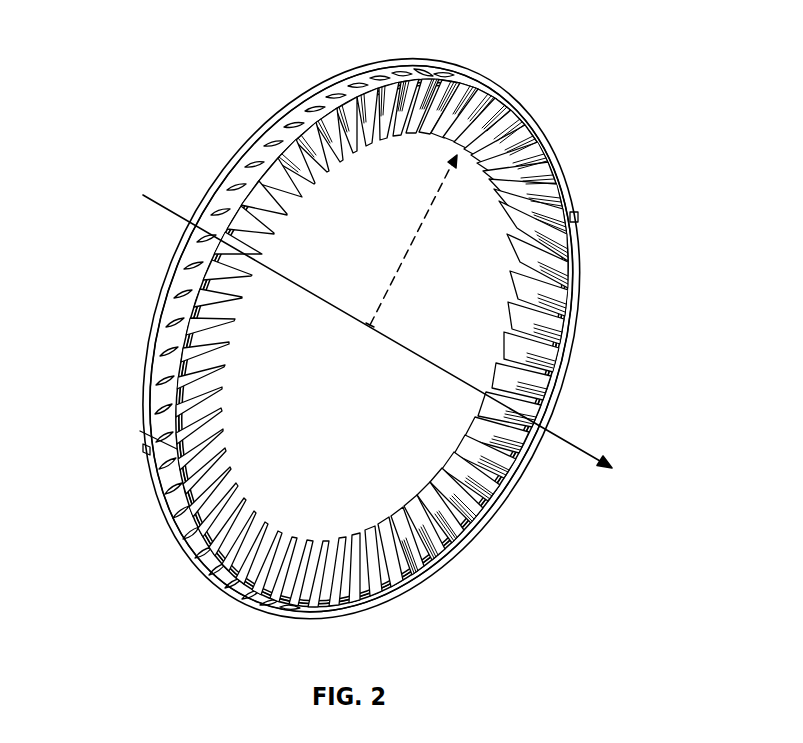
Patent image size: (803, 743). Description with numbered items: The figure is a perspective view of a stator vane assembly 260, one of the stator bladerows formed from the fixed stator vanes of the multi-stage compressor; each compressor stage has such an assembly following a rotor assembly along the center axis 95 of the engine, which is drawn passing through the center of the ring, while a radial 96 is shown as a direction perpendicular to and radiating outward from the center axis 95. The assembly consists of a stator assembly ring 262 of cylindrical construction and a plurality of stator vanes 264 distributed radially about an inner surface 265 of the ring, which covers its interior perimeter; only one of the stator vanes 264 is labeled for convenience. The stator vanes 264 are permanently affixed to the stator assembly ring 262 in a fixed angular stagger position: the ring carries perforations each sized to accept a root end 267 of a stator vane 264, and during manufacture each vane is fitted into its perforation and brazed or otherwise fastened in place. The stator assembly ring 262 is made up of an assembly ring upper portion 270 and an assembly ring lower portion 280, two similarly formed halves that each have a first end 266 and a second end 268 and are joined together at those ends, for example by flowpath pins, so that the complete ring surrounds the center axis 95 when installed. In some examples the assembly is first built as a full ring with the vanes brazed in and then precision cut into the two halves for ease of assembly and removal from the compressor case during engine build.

The stator vane assembly 260 is at (248, 48).
The stator assembly ring 262 is at (181, 273).
The stator vanes 264 is at (555, 285).
The inner surface 265 is at (557, 207).
The first end 266 is at (579, 237).
The root end 267 is at (488, 107).
The second end 268 is at (577, 217).
The assembly ring upper portion 270 is at (287, 110).
The assembly ring lower portion 280 is at (177, 535).
The center axis 95 is at (163, 207).
The radial 96 is at (417, 233).